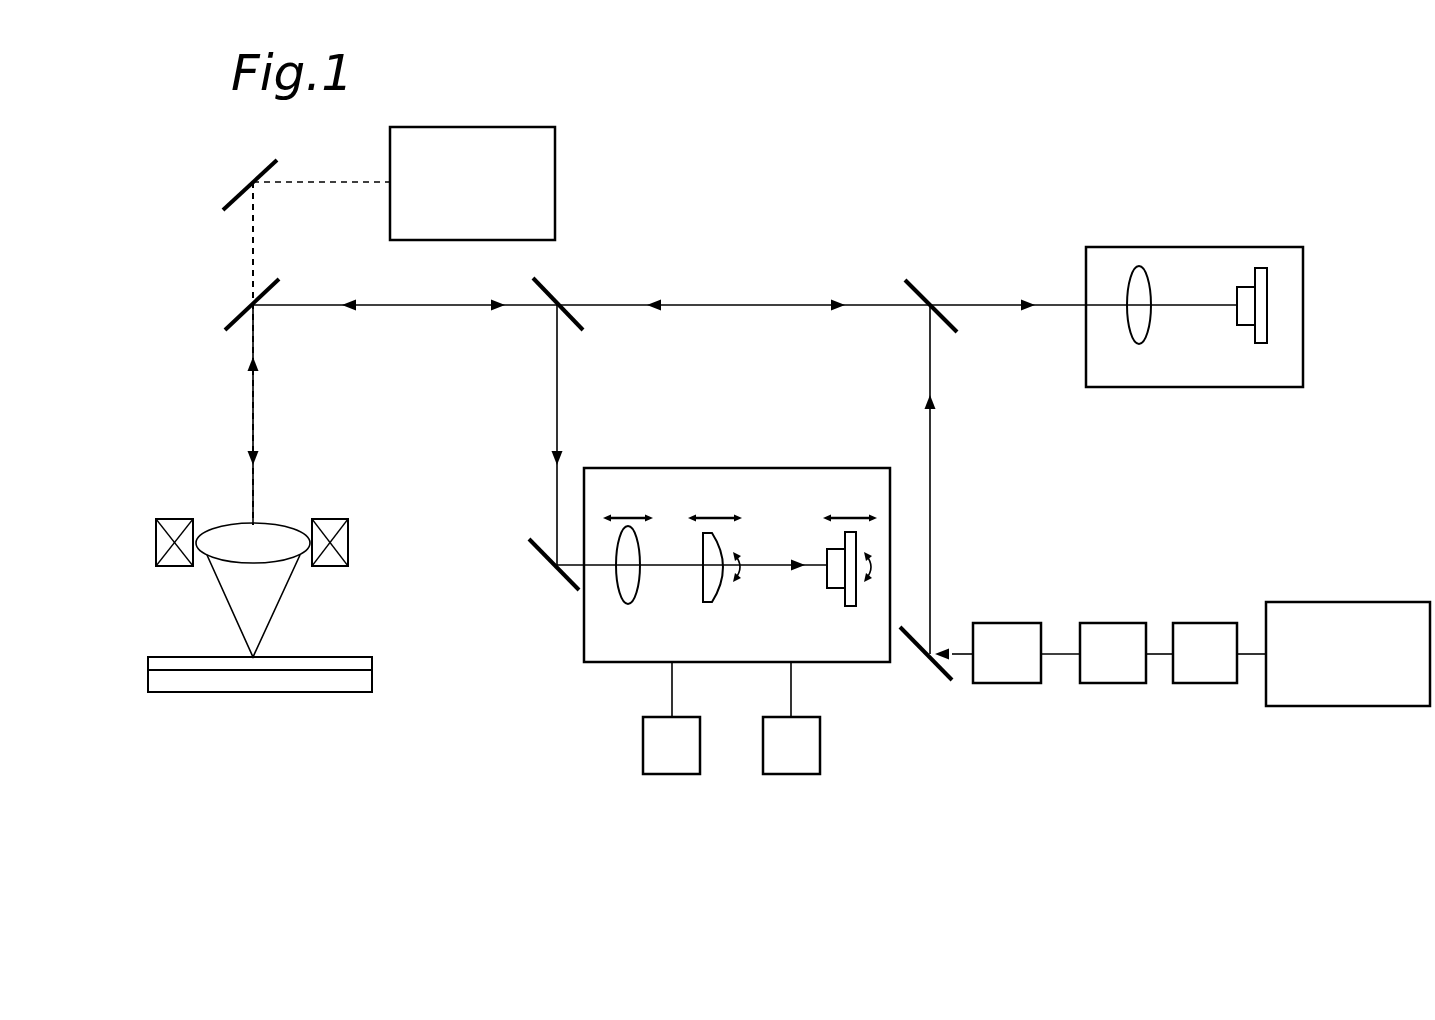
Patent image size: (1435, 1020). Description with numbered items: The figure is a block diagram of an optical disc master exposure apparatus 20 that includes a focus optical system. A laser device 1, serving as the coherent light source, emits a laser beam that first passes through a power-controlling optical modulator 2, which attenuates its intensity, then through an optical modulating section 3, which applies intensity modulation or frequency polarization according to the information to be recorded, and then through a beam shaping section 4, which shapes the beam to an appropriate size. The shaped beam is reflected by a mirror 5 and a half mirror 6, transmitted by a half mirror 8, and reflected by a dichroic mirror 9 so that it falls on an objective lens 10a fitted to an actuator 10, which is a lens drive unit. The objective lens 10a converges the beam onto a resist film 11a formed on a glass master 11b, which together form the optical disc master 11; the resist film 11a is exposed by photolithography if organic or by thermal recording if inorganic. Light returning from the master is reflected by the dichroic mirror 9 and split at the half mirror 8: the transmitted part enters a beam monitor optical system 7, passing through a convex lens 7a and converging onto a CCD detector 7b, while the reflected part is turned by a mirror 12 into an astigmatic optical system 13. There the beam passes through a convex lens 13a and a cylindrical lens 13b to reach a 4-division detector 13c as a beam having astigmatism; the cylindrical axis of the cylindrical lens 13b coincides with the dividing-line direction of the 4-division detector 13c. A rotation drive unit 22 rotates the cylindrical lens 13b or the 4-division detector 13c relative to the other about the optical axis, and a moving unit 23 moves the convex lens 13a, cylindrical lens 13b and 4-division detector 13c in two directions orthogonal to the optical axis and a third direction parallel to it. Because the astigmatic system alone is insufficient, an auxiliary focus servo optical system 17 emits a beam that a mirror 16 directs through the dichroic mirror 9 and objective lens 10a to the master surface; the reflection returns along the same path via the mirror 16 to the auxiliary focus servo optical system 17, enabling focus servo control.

The laser device 1 is at (1338, 603).
The power-controlling optical modulator 2 is at (1205, 623).
The optical modulating section 3 is at (1117, 623).
The beam shaping section 4 is at (1013, 623).
The mirror 5 is at (912, 645).
The half mirror 6 is at (918, 292).
The beam monitor optical system 7 is at (1210, 247).
The convex lens 7a is at (1140, 323).
The CCD detector 7b is at (1255, 324).
The half mirror 8 is at (547, 288).
The dichroic mirror 9 is at (225, 327).
The actuator 10 is at (335, 518).
The objective lens 10a is at (225, 523).
The optical disc master 11 is at (178, 652).
The resist film 11a is at (290, 663).
The glass master 11b is at (293, 685).
The mirror 12 is at (560, 575).
The astigmatic optical system 13 is at (740, 468).
The convex lens 13a is at (627, 580).
The cylindrical lens 13b is at (715, 580).
The 4-division detector 13c is at (850, 580).
The mirror 16 is at (224, 200).
The auxiliary focus servo optical system 17 is at (555, 147).
The optical disc master exposure apparatus 20 is at (1178, 146).
The rotation drive unit 22 is at (791, 745).
The moving unit 23 is at (671, 745).